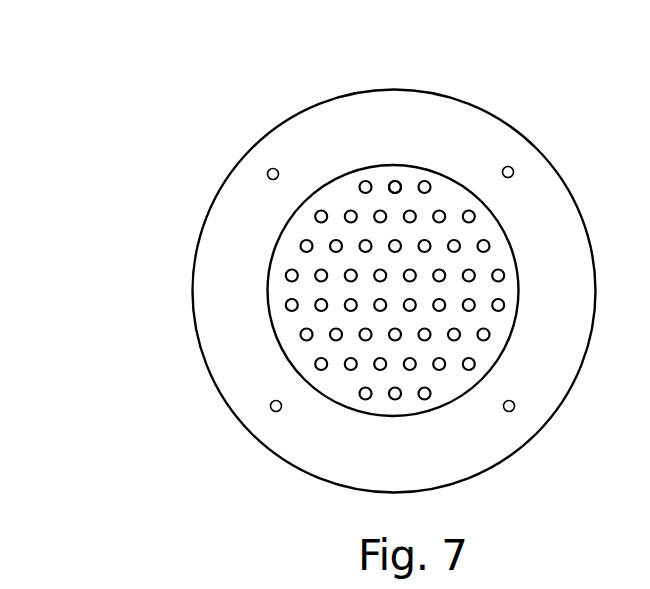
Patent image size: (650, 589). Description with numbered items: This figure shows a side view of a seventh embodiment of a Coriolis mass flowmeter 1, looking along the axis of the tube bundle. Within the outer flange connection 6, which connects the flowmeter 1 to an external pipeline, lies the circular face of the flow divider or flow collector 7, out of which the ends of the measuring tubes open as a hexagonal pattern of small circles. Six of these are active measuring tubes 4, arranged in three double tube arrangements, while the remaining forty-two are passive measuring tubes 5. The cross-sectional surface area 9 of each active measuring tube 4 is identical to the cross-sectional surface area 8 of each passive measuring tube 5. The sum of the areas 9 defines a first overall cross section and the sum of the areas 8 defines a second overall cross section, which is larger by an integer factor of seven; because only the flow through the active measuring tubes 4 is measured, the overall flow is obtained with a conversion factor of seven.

The Coriolis mass flowmeter 1 is at (118, 70).
The active measuring tube 4 is at (313, 217).
The passive measuring tube 5 is at (401, 181).
The flange connection 6 is at (247, 362).
The flow divider / flow collector 7 is at (348, 388).
The cross-sectional surface area of passive measuring tube 8 is at (391, 181).
The cross-sectional surface area of active measuring tube 9 is at (465, 209).